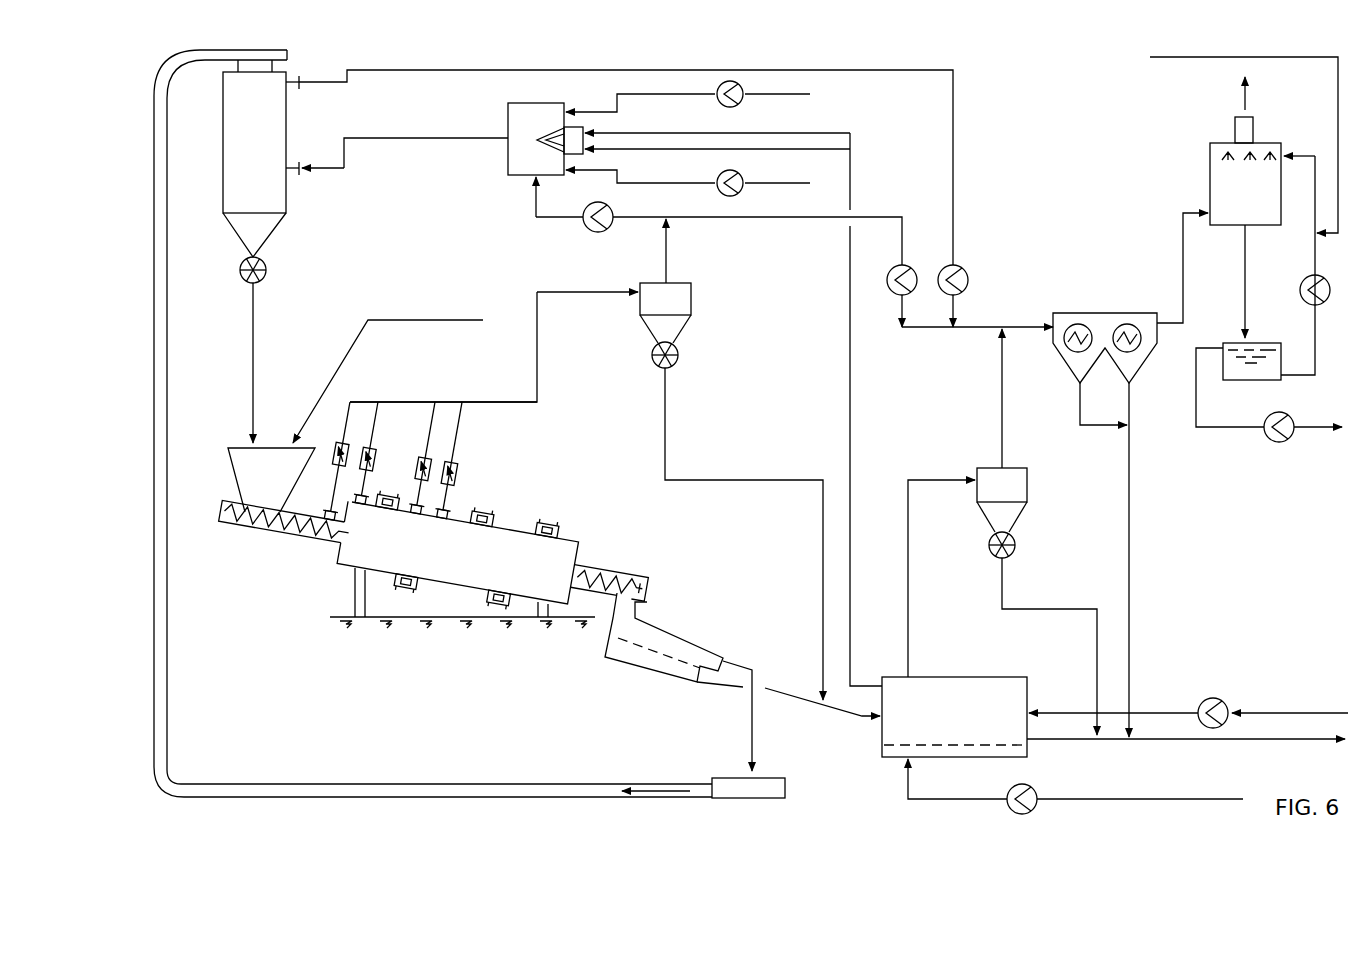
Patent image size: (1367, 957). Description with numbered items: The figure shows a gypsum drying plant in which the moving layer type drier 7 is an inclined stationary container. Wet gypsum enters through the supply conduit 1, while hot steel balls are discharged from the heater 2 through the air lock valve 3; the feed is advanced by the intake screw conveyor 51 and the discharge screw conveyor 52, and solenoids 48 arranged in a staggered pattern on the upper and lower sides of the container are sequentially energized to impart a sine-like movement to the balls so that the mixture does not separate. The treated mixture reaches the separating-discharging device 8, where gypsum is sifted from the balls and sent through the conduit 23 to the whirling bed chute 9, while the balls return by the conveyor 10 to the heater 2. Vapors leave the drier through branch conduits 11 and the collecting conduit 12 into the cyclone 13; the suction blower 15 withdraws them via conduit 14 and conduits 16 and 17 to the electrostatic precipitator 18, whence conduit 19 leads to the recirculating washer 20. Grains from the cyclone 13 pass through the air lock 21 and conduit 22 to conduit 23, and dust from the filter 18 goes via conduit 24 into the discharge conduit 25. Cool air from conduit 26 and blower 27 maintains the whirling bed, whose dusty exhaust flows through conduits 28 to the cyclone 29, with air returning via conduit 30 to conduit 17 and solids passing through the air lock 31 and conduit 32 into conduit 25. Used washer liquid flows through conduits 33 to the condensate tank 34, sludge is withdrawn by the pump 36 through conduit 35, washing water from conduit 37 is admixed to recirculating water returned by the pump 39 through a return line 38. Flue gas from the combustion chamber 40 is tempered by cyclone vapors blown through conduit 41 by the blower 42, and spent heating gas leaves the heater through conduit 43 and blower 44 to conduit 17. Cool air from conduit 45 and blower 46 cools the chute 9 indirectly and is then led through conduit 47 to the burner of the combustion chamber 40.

The supply conduit 1 is at (406, 320).
The heater 2 is at (287, 126).
The air lock valve 3 is at (267, 263).
The moving layer type drier 7 is at (566, 540).
The separating-discharging device 8 is at (650, 660).
The whirling bed chute 9 is at (951, 759).
The conveyor 10 is at (168, 686).
The branch conduits 11 is at (370, 441).
The collecting conduit 12 is at (540, 362).
The cyclone 13 is at (692, 292).
The conduit 14 is at (864, 216).
The suction blower 15 is at (896, 267).
The conduit 16 is at (928, 340).
The conduit 17 is at (1004, 333).
The electrostatic precipitator 18 is at (1095, 313).
The conduit 19 is at (1184, 290).
The recirculating washer 20 is at (1209, 178).
The air lock 21 is at (679, 353).
The conduit 22 is at (732, 480).
The conduit 23 is at (847, 714).
The conduit 24 is at (1131, 525).
The discharge conduit 25 is at (1250, 741).
The conduit 26 is at (1143, 798).
The blower 27 is at (1035, 791).
The conduits 28 is at (910, 612).
The cyclone 29 is at (1028, 490).
The conduit 30 is at (1001, 413).
The air lock 31 is at (1017, 541).
The conduit 32 is at (1060, 610).
The conduits 33 is at (1250, 283).
The condensate tank 34 is at (1245, 382).
The conduit 35 is at (1247, 430).
The pump 36 is at (1280, 443).
The conduit 37 is at (1337, 102).
The recirculation line 38 is at (1316, 373).
The pump 39 is at (1328, 280).
The combustion chamber 40 is at (507, 122).
The conduit 41 is at (654, 220).
The blower 42 is at (593, 232).
The conduit 43 is at (955, 117).
The blower 44 is at (964, 272).
The conduit 45 is at (1284, 712).
The blower 46 is at (1216, 699).
The conduit 47 is at (848, 425).
The solenoids 48 is at (487, 512).
The intake screw conveyor 51 is at (290, 532).
The discharge screw conveyor 52 is at (618, 573).